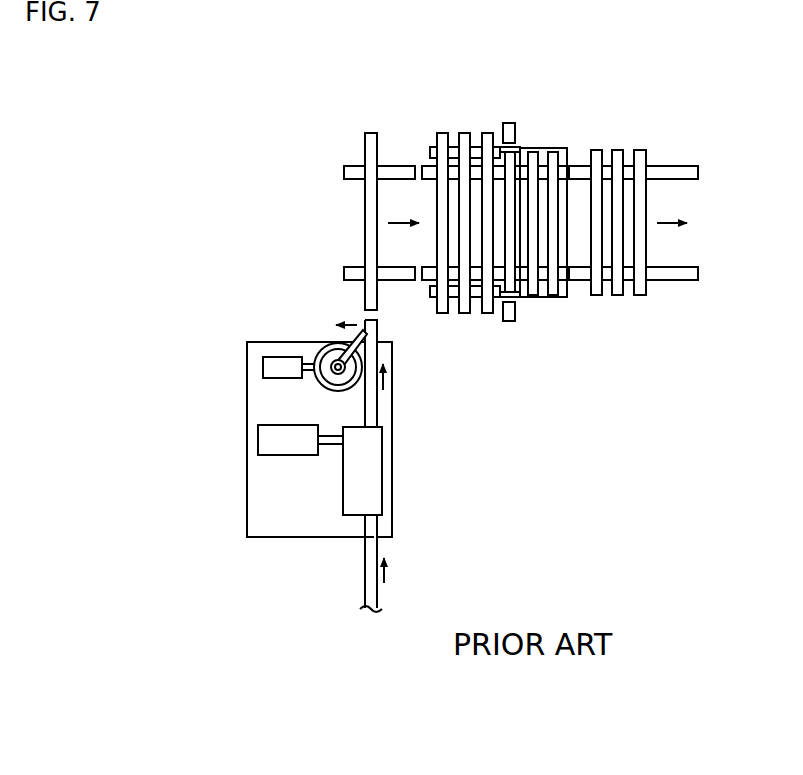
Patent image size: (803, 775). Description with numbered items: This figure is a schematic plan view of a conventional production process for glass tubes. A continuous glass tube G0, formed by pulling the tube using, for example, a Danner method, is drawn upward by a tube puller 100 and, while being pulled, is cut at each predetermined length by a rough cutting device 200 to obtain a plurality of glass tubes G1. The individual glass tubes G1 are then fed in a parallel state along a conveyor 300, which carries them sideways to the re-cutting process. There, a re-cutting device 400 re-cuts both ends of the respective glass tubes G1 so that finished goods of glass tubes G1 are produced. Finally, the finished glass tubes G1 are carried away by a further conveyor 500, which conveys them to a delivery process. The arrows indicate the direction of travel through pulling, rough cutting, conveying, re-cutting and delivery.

The tube puller 100 is at (337, 478).
The rough cutting device 200 is at (307, 383).
The conveyor 300 is at (408, 284).
The re-cutting device 400 is at (487, 323).
The conveyor 500 is at (668, 293).
The continuous glass tube G0 is at (362, 562).
The glass tube G1 is at (365, 147).